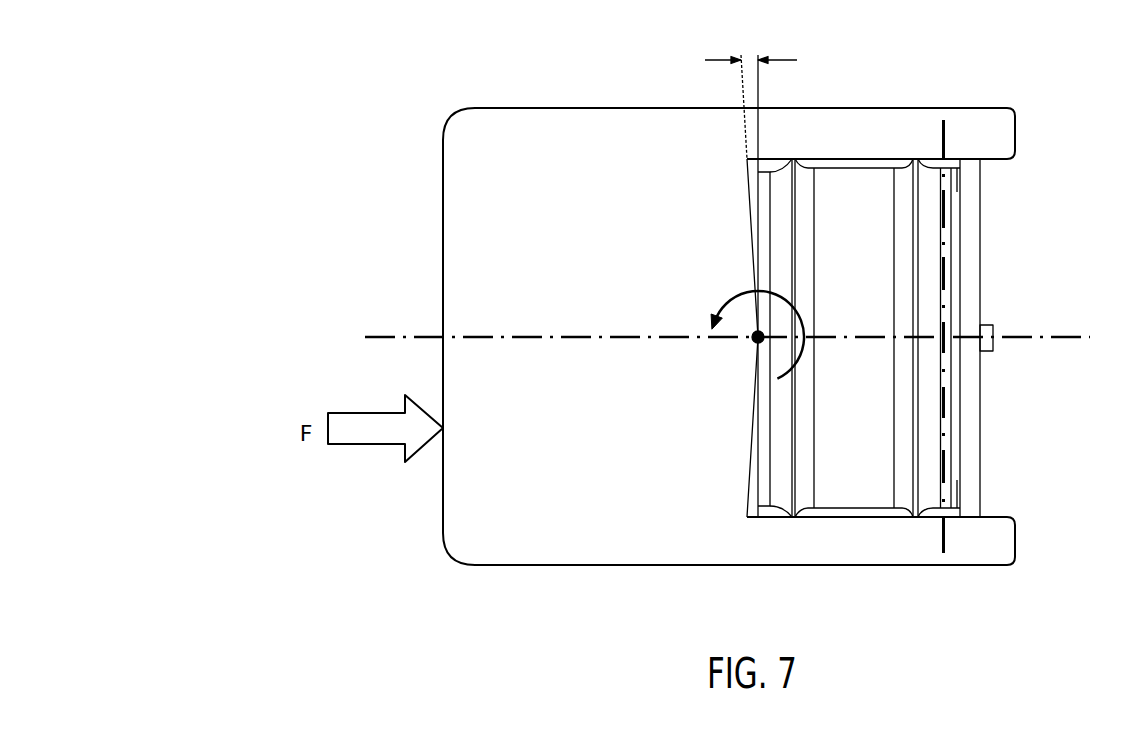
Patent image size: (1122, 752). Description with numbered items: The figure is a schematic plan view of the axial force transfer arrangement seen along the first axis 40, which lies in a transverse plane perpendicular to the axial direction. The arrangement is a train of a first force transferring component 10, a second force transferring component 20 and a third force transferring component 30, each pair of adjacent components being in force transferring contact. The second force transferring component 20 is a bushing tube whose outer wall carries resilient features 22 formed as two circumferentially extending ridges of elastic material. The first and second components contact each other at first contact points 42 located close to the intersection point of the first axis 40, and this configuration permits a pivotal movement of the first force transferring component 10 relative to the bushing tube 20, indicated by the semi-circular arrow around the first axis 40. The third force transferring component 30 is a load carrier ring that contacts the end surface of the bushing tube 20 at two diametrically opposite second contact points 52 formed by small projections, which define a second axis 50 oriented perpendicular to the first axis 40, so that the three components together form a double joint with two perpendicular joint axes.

The first force transferring component 10 is at (595, 224).
The second force transferring component 20 is at (842, 450).
The resilient features 22 is at (791, 158).
The third force transferring component 30 is at (973, 279).
The first axis 40 is at (752, 342).
The first contact points 42 is at (756, 345).
The second axis 50 is at (943, 126).
The second contact points 52 is at (958, 180).